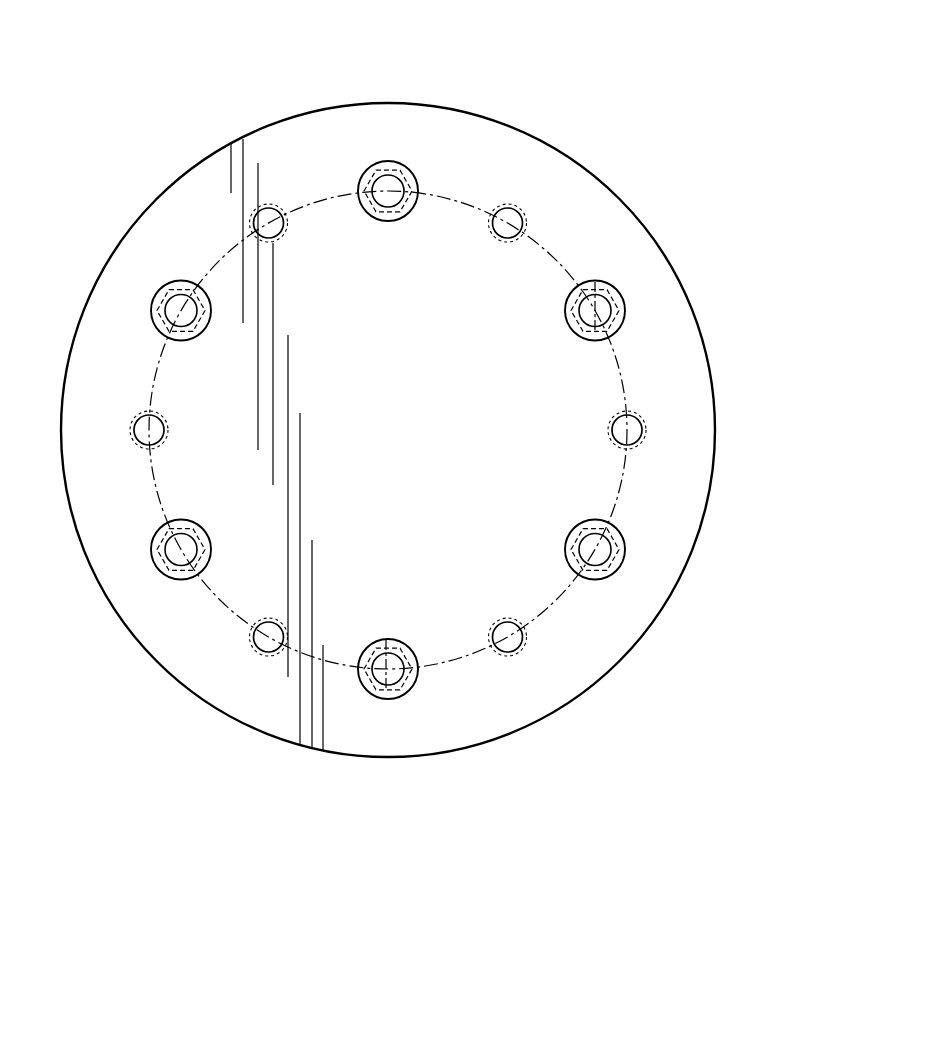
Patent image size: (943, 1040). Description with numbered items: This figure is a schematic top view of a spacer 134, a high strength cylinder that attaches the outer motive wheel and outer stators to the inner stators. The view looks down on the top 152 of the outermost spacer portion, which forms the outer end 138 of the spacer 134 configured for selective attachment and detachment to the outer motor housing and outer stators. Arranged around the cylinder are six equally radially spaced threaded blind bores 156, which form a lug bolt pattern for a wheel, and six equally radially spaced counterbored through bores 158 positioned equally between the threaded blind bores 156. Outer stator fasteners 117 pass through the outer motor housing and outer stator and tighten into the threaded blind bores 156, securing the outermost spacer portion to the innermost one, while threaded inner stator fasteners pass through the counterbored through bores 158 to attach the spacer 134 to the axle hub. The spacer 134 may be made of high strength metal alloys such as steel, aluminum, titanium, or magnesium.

The spacer 134 is at (418, 103).
The outer end 138 is at (643, 633).
The top 152 is at (388, 430).
The outer stator fastener 117 is at (595, 282).
The counterbored through bore 158 is at (620, 290).
The threaded blind bore 156 is at (640, 418).